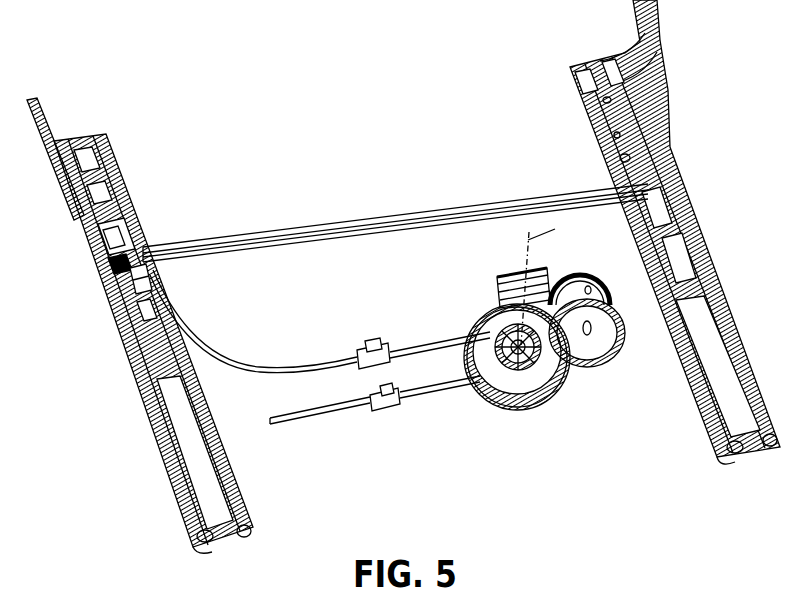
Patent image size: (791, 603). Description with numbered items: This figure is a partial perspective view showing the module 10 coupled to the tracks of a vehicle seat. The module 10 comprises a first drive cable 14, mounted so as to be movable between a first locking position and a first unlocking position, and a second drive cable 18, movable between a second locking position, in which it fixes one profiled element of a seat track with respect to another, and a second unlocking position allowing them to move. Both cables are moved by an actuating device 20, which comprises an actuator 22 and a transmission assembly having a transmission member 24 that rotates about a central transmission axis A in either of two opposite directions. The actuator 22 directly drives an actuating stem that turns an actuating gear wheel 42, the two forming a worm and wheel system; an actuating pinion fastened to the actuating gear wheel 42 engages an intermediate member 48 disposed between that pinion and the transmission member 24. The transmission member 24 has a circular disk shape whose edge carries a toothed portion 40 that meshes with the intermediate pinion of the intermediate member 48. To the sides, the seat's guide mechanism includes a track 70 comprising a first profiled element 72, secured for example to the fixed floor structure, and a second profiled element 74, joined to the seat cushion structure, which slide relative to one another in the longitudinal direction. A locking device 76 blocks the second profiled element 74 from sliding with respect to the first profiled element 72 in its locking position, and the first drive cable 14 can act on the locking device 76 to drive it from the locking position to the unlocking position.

The module 10 is at (511, 452).
The first drive cable 14 is at (405, 347).
The second drive cable 18 is at (428, 403).
The actuating device 20 is at (611, 431).
The actuator 22 is at (507, 272).
The transmission member 24 is at (510, 372).
The toothed portion 40 is at (540, 408).
The actuating gear wheel 42 is at (580, 268).
The intermediate member 48 is at (601, 345).
The first track 70 is at (128, 236).
The first profiled element 72 is at (170, 478).
The second profiled element 74 is at (138, 290).
The locking device 76 is at (110, 258).